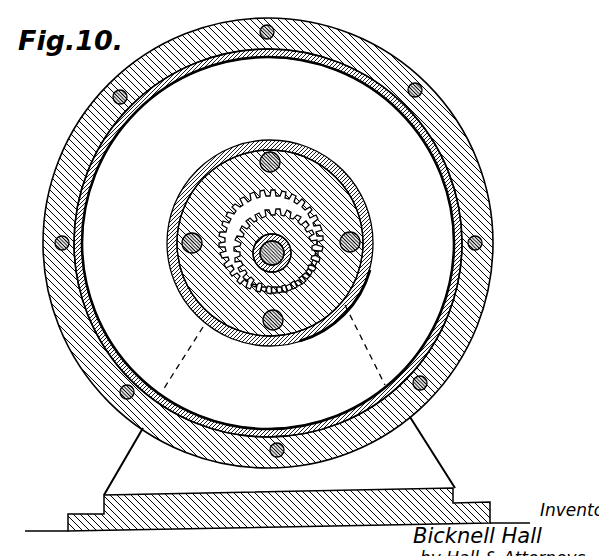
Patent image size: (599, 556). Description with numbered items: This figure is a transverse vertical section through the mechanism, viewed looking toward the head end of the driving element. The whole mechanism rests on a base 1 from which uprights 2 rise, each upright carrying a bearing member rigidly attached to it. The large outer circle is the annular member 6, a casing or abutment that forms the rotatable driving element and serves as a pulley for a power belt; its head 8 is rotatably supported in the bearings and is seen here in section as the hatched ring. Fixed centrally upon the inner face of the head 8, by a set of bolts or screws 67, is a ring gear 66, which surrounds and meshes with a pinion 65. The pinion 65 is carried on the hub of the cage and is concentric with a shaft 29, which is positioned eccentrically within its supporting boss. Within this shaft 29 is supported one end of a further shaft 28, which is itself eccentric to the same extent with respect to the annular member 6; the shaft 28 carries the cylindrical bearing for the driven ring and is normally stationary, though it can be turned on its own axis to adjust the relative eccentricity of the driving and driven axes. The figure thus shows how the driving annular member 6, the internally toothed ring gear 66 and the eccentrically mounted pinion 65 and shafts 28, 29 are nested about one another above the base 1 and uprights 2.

The base 1 is at (176, 520).
The uprights 2 is at (135, 468).
The annular member 6 is at (442, 95).
The head 8 is at (288, 140).
The shaft 28 is at (243, 262).
The shaft 29 is at (307, 264).
The pinion 65 is at (305, 232).
The ring gear 66 is at (342, 182).
The bolts or screws 67 is at (265, 157).